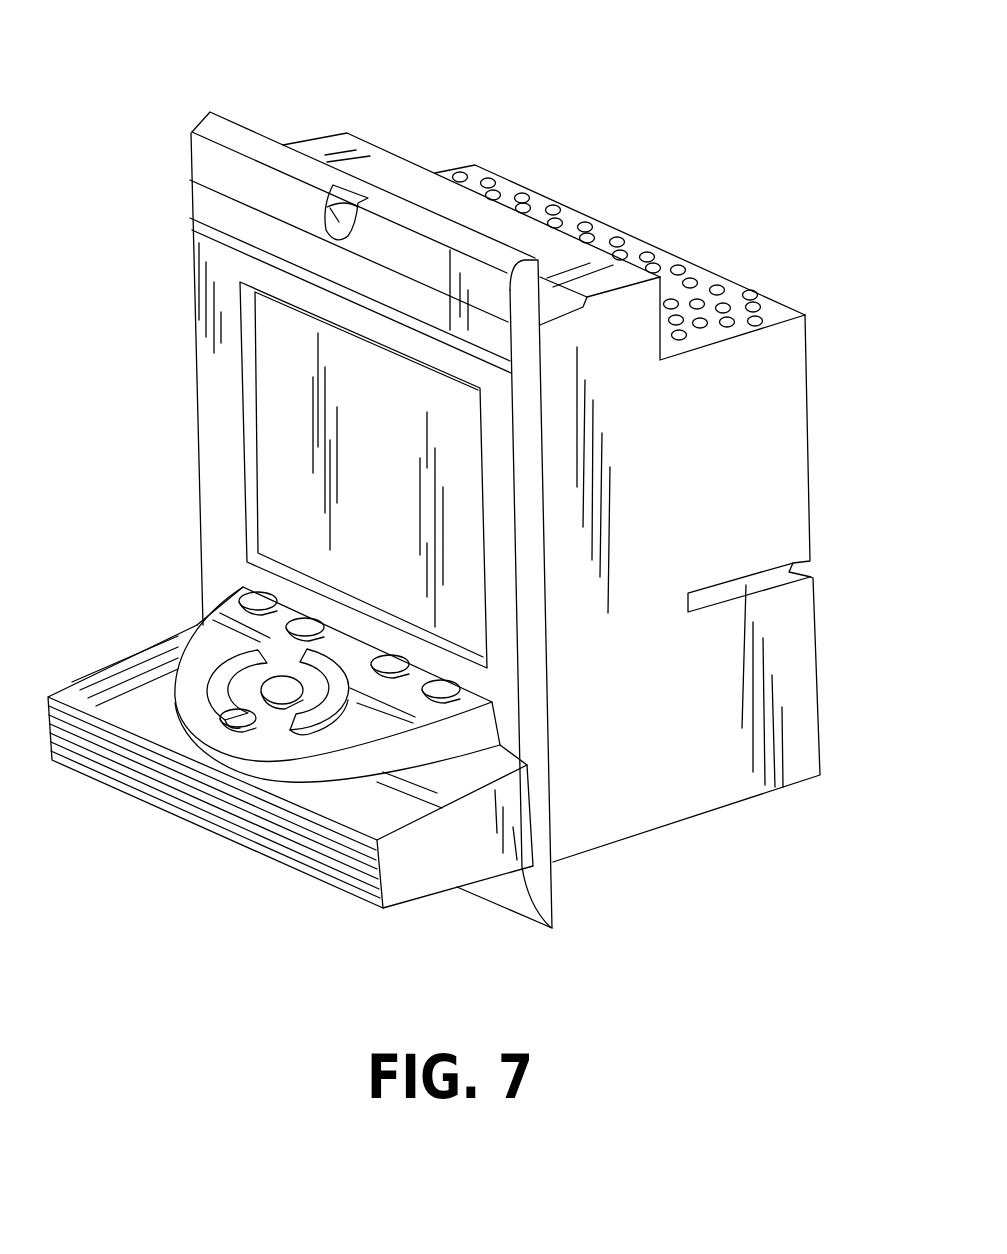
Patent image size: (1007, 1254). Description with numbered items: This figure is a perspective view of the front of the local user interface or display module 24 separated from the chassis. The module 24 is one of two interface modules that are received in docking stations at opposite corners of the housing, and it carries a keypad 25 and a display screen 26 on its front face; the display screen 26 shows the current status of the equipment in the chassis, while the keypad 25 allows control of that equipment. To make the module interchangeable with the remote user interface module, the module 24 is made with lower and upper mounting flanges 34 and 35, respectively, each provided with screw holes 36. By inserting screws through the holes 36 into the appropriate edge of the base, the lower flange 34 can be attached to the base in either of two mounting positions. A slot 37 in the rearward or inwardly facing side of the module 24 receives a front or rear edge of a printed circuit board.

The local user interface or display module 24 is at (806, 315).
The keypad 25 is at (203, 650).
The display screen 26 is at (268, 423).
The lower flange 34 is at (542, 895).
The upper flange 35 is at (193, 130).
The screw holes 36 is at (332, 200).
The slot 37 is at (793, 562).